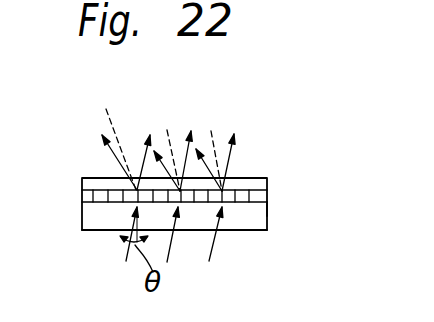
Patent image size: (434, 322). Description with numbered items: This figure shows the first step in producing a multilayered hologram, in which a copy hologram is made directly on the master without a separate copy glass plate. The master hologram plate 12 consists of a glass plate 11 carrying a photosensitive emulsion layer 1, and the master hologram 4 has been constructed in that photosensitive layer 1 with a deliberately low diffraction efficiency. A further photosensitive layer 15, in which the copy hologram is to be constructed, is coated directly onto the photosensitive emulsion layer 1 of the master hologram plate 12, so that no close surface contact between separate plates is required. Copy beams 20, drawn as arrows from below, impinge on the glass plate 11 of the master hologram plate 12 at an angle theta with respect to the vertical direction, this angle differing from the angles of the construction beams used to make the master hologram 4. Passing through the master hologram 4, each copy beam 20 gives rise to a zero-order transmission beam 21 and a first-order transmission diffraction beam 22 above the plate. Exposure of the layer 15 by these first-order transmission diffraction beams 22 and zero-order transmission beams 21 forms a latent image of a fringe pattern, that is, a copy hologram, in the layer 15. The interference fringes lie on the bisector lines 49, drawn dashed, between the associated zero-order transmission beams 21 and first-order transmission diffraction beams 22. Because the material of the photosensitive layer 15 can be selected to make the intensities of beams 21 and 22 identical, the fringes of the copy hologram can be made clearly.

The master hologram plate 12 is at (175, 192).
The master hologram 4 is at (243, 192).
The photosensitive layer 15 is at (267, 178).
The photosensitive emulsion layer 1 is at (267, 199).
The glass plate 11 is at (266, 220).
The bisector lines 49 is at (196, 112).
The first-order transmission diffraction beams 22 is at (119, 162).
The zero-order transmission beams 21 is at (145, 146).
The copy beams 20 is at (126, 259).